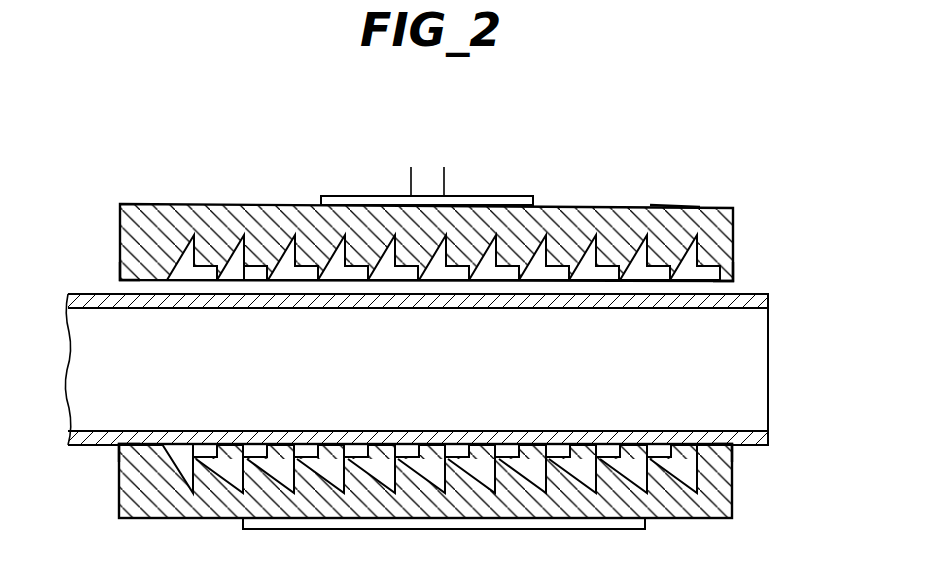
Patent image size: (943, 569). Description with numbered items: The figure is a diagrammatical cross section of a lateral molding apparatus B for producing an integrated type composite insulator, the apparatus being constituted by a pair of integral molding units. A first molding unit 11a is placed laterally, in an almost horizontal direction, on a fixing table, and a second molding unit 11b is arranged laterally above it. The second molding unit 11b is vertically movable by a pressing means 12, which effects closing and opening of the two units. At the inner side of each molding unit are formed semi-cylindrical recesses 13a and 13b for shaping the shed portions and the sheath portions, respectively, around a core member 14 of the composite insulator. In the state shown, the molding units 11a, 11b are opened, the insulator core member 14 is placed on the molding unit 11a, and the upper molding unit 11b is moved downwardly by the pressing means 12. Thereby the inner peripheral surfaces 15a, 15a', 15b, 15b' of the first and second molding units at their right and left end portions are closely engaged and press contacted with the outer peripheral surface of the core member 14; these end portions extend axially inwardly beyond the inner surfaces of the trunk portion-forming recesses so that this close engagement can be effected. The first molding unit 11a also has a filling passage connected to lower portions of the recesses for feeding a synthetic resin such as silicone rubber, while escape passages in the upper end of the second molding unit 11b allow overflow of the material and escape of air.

The first molding unit 11a is at (723, 480).
The second molding unit 11b is at (466, 218).
The pressing means 12 is at (428, 155).
The semi-cylindrical recess for shed portions 13a is at (235, 260).
The semi-cylindrical recess for sheath portions 13b is at (254, 272).
The core member 14 is at (768, 303).
The inner peripheral surface 15a is at (100, 454).
The inner peripheral surface 15a' is at (776, 434).
The inner peripheral surface 15b is at (92, 263).
The inner peripheral surface 15b' is at (766, 265).
The lateral molding apparatus B is at (622, 199).